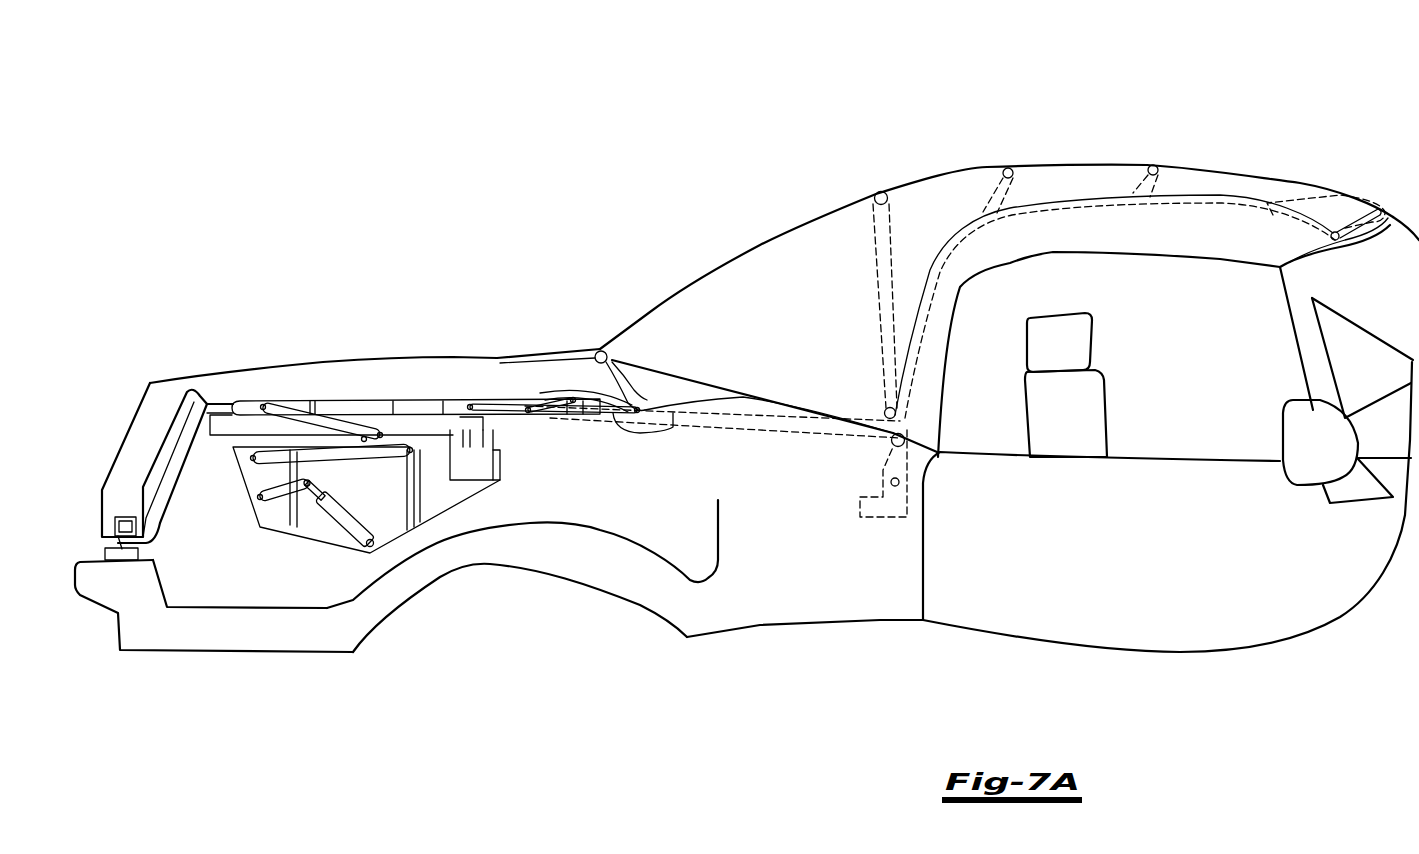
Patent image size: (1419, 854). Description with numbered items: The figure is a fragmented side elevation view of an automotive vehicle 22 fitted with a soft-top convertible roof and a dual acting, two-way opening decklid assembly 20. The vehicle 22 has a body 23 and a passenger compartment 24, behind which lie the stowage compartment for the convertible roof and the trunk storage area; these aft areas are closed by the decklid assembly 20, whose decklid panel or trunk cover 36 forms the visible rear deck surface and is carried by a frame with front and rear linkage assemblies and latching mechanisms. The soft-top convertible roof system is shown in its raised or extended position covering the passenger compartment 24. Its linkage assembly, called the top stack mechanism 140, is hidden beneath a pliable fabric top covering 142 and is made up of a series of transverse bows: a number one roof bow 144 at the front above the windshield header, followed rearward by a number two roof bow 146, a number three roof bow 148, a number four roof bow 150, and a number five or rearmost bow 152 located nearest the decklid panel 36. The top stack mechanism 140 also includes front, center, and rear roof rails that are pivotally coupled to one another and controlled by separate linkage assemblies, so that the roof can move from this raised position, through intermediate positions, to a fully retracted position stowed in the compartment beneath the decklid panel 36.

The decklid assembly 20 is at (349, 320).
The automotive vehicle 22 is at (1270, 628).
The body 23 is at (807, 592).
The passenger compartment 24 is at (1197, 443).
The decklid panel 36 is at (323, 358).
The top stack mechanism 140 is at (790, 473).
The pliable fabric top covering 142 is at (923, 197).
The number one roof bow 144 is at (1358, 217).
The number two roof bow 146 is at (1155, 167).
The number three roof bow 148 is at (1008, 168).
The number four roof bow 150 is at (886, 284).
The rearmost bow 152 is at (703, 410).